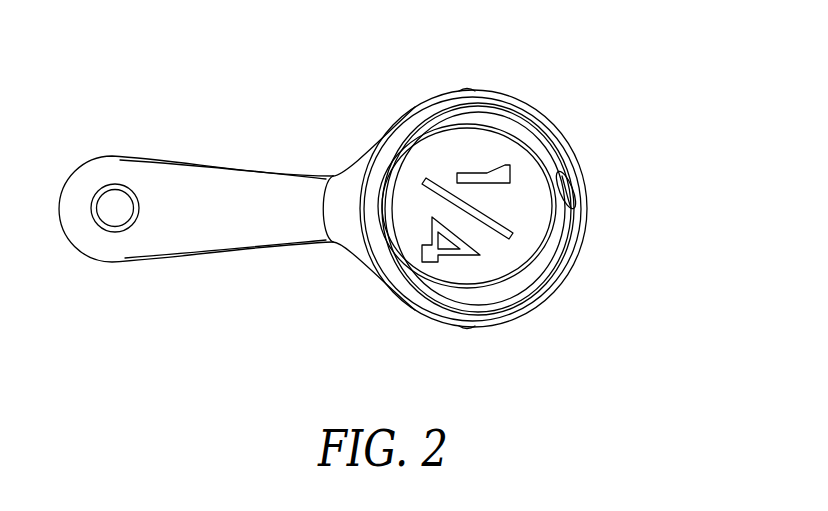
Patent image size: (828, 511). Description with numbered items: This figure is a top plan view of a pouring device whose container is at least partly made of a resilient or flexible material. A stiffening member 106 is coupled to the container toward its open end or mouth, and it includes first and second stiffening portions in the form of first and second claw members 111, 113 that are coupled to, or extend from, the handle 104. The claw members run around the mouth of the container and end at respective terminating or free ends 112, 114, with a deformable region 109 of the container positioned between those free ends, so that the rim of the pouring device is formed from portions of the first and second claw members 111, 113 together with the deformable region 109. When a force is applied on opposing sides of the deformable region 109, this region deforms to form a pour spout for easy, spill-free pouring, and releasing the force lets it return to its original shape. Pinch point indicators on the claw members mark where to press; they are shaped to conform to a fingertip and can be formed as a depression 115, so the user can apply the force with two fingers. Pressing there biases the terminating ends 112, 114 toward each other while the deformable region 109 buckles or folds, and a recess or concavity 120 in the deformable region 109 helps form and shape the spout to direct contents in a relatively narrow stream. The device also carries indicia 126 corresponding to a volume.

The handle 104 is at (241, 166).
The stiffening member 106 is at (406, 318).
The deformable region 109 is at (592, 125).
The first claw member 111 is at (418, 100).
The terminating end of first claw member 112 is at (564, 114).
The second claw member 113 is at (520, 318).
The terminating end of second claw member 114 is at (560, 302).
The depression 115 is at (466, 77).
The concavity 120 is at (564, 186).
The indicia 126 is at (482, 172).